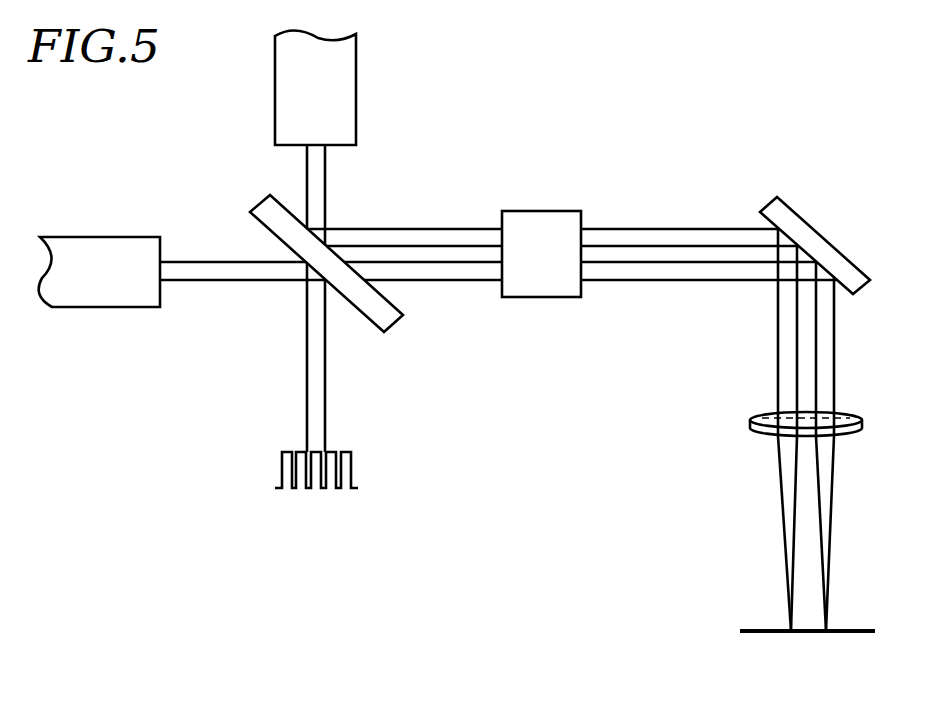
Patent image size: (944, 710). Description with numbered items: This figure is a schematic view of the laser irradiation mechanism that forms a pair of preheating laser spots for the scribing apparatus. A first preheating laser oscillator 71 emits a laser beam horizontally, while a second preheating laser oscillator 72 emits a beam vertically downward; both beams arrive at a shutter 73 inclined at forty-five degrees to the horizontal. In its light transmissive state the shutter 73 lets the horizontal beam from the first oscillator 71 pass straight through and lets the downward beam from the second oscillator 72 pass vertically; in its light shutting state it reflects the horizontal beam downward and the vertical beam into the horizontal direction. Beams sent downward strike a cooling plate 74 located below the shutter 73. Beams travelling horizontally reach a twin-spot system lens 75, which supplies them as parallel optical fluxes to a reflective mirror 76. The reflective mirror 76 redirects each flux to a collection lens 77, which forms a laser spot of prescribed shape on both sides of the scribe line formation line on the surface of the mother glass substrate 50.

The mother glass substrate 50 is at (758, 630).
The first preheating laser oscillator 71 is at (93, 246).
The second preheating laser oscillator 72 is at (345, 83).
The shutter 73 is at (262, 207).
The cooling plate 74 is at (356, 467).
The twin-spot system lens 75 is at (544, 218).
The reflective mirror 76 is at (810, 229).
The collection lens 77 is at (770, 412).